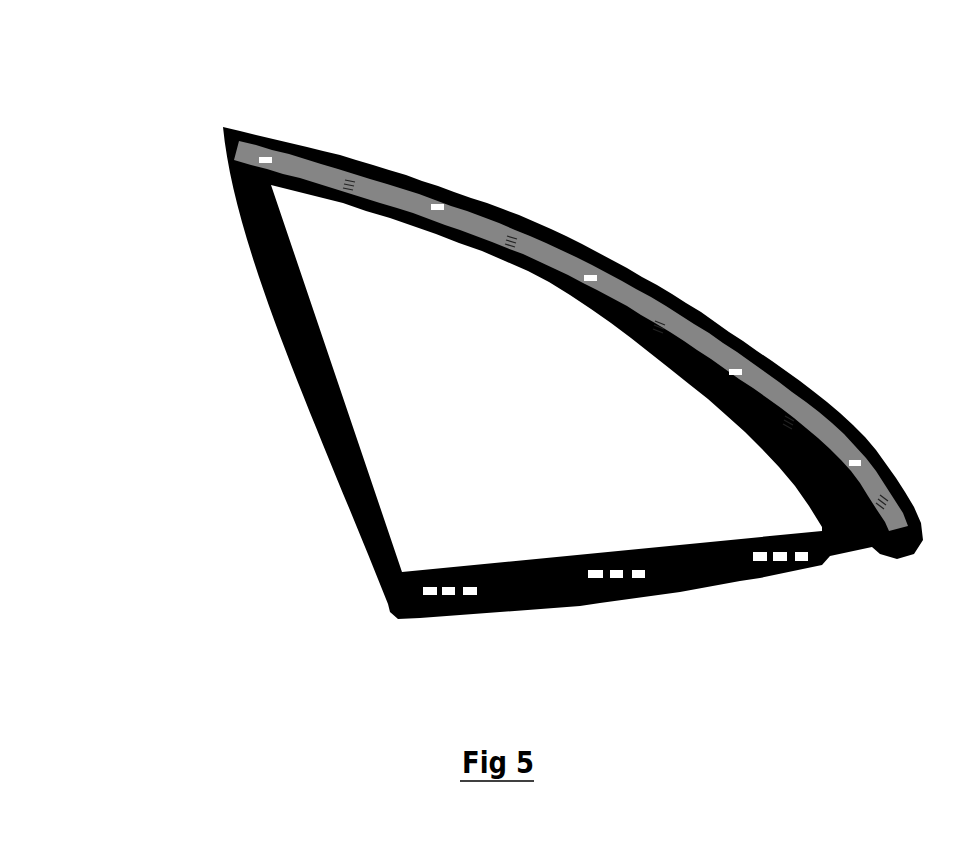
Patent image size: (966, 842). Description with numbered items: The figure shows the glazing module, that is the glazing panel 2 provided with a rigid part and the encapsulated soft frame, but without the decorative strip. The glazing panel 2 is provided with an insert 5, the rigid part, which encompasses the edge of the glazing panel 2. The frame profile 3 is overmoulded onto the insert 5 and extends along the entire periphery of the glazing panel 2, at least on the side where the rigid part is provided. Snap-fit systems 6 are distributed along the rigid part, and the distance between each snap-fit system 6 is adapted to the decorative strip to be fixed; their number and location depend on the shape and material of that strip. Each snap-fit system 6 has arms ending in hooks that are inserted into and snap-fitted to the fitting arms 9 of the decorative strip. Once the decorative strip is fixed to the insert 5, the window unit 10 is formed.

The glazing panel 2 is at (505, 440).
The frame profile 3 is at (290, 316).
The insert 5 is at (548, 262).
The snap-fit system 6 is at (607, 263).
The fitting arm 9 is at (511, 240).
The window unit 10 is at (488, 316).